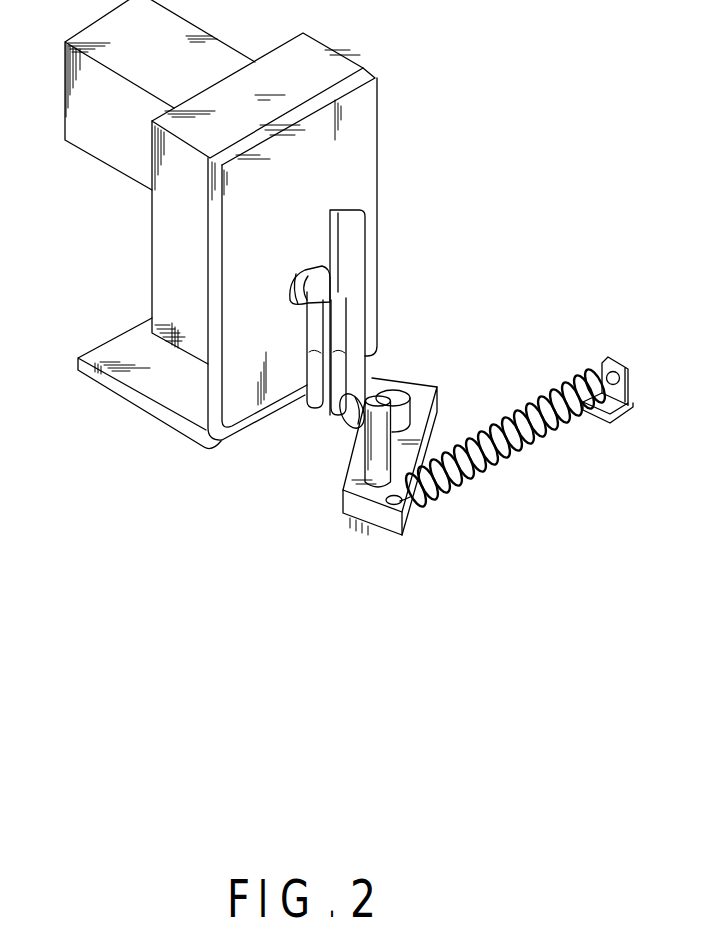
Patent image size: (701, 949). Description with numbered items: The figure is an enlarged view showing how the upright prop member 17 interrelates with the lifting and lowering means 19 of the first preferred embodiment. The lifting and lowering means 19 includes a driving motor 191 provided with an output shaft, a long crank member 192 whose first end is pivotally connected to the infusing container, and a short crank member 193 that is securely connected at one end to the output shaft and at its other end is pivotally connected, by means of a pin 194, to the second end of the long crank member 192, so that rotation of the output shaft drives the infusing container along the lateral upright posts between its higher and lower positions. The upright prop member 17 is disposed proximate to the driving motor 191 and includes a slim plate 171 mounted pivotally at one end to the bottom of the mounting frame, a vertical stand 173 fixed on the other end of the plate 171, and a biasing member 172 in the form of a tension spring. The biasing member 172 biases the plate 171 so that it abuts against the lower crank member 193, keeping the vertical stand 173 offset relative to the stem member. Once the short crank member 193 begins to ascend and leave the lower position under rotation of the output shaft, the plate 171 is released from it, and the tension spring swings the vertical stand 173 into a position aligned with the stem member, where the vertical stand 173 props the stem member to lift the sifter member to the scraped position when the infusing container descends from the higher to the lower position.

The upright prop member 17 is at (465, 439).
The lifting and lowering means 19 is at (252, 252).
The slim plate 171 is at (436, 443).
The biasing member 172 is at (548, 438).
The vertical stand 173 is at (370, 487).
The driving motor 191 is at (155, 256).
The long crank member 192 is at (360, 246).
The short crank member 193 is at (308, 404).
The pin 194 is at (355, 436).